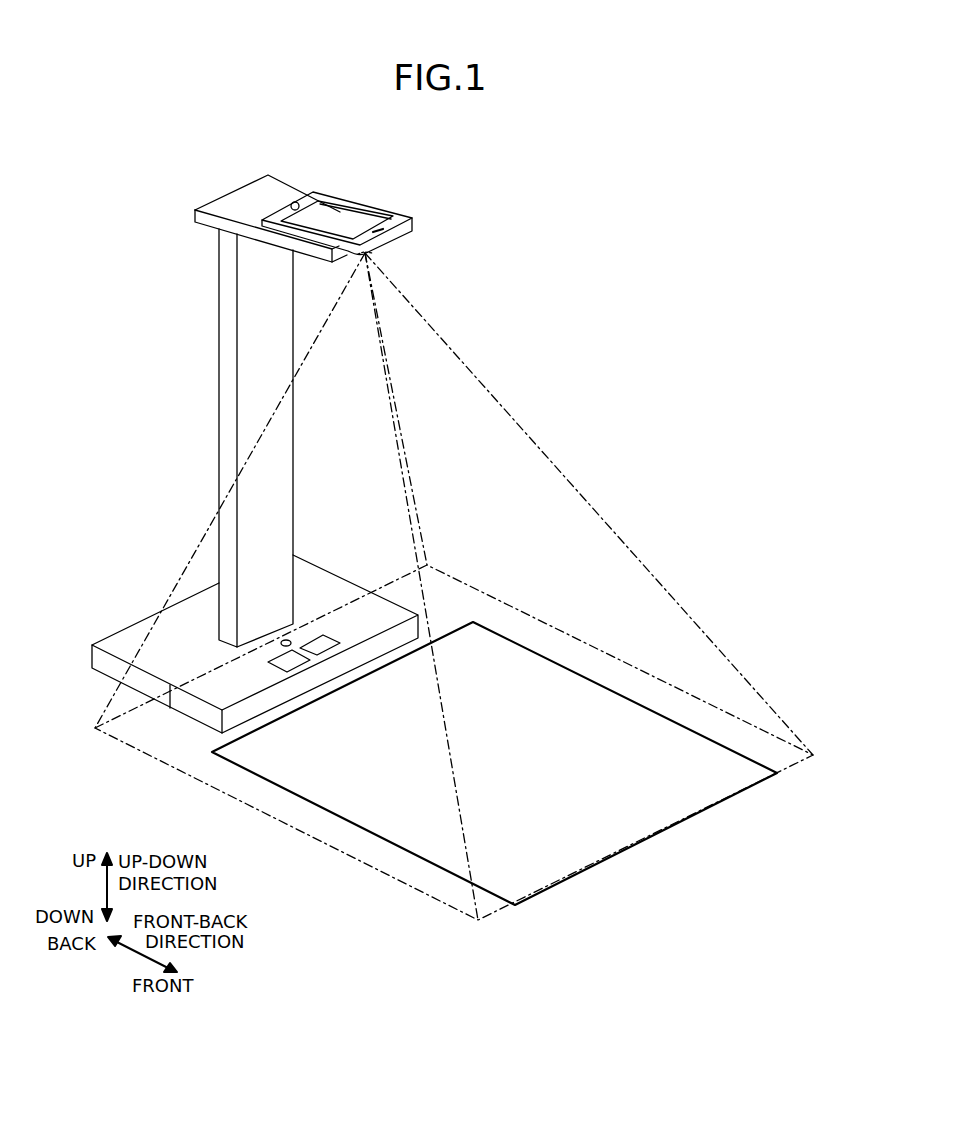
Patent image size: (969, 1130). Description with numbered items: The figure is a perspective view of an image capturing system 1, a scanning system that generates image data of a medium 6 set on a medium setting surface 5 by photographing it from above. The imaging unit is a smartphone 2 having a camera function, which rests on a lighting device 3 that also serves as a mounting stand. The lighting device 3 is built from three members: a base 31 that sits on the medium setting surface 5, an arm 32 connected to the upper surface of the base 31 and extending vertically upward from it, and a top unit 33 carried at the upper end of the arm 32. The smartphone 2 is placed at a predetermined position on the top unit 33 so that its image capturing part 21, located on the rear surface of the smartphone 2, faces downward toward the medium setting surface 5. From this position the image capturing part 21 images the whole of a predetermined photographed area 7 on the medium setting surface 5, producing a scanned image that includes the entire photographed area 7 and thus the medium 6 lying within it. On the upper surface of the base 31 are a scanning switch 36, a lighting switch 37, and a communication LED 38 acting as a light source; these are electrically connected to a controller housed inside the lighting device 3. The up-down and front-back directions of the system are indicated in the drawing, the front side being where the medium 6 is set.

The image capturing system 1 is at (599, 152).
The smartphone 2 is at (414, 218).
The lighting device 3 is at (193, 206).
The image capturing part 21 is at (380, 257).
The base 31 is at (122, 640).
The arm 32 is at (225, 313).
The top unit 33 is at (252, 190).
The scanning switch 36 is at (293, 667).
The lighting switch 37 is at (325, 647).
The communication LED 38 is at (288, 638).
The medium setting surface 5 is at (683, 853).
The medium 6 is at (580, 852).
The photographed area 7 is at (405, 885).